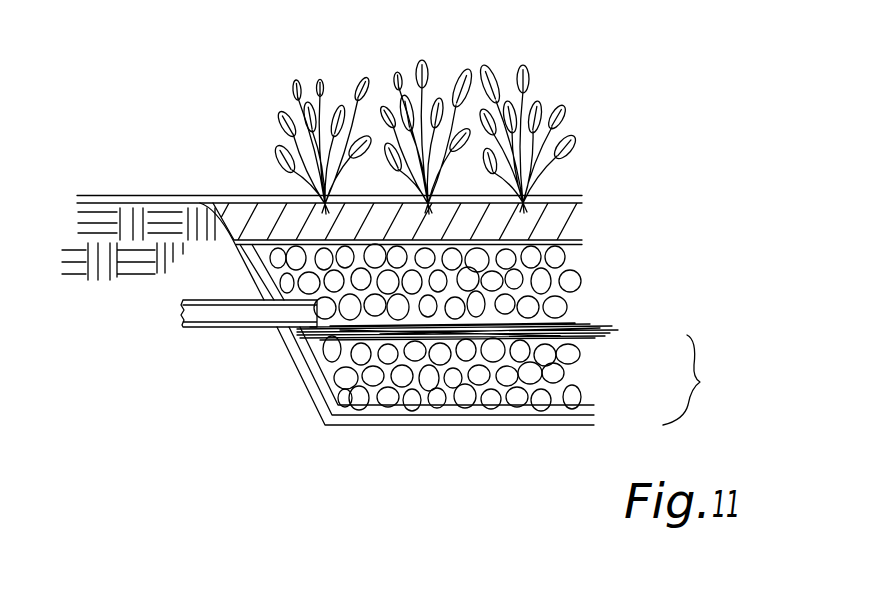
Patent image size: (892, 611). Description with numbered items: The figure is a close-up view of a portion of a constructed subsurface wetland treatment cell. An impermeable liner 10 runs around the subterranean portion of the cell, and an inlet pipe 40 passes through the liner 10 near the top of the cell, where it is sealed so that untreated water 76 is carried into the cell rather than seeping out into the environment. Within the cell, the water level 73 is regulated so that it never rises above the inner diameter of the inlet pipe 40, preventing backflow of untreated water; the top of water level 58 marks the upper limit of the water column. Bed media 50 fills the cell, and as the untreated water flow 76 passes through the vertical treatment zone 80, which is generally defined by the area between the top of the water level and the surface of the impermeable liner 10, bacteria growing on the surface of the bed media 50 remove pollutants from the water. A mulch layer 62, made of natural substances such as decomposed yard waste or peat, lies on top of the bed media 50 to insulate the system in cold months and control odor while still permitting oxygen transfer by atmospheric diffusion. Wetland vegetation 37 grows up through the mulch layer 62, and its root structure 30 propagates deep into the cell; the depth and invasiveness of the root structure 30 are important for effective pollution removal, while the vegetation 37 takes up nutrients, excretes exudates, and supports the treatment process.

The impermeable liner 10 is at (545, 436).
The root structure 30 is at (400, 358).
The wetland vegetation 37 is at (475, 57).
The inlet pipe 40 is at (240, 335).
The bed media 50 is at (438, 372).
The top of water level 58 is at (624, 340).
The mulch layer 62 is at (571, 186).
The water level 73 is at (590, 324).
The untreated water 76 is at (170, 308).
The vertical treatment zone 80 is at (695, 380).